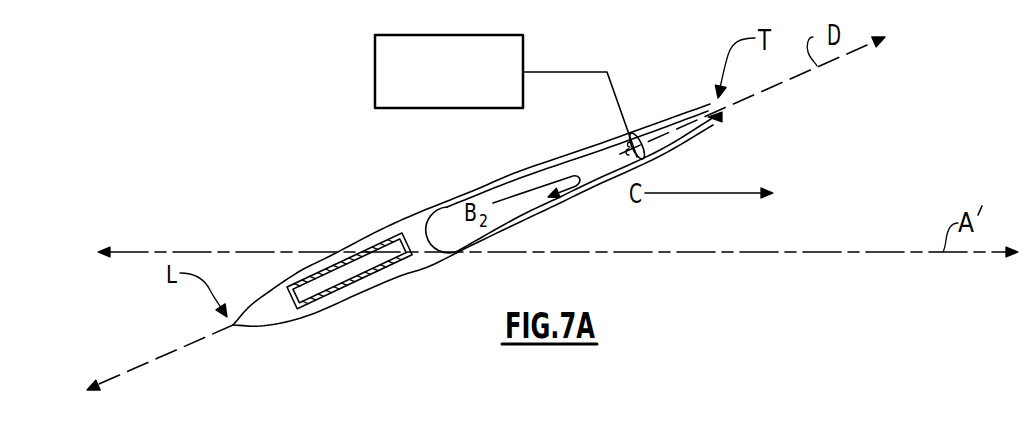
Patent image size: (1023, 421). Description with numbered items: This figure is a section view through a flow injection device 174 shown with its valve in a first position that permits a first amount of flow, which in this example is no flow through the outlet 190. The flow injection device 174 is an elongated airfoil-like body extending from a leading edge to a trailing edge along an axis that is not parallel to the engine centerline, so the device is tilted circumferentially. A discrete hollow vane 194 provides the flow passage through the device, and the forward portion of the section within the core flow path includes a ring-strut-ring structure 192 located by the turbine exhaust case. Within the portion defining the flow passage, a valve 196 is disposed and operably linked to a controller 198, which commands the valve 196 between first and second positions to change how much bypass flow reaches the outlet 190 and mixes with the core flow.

The flow injection device 174 is at (417, 210).
The outlet 190 is at (722, 117).
The ring-strut-ring structure 192 is at (327, 265).
The hollow vane 194 is at (277, 327).
The valve 196 is at (640, 137).
The controller 198 is at (470, 98).